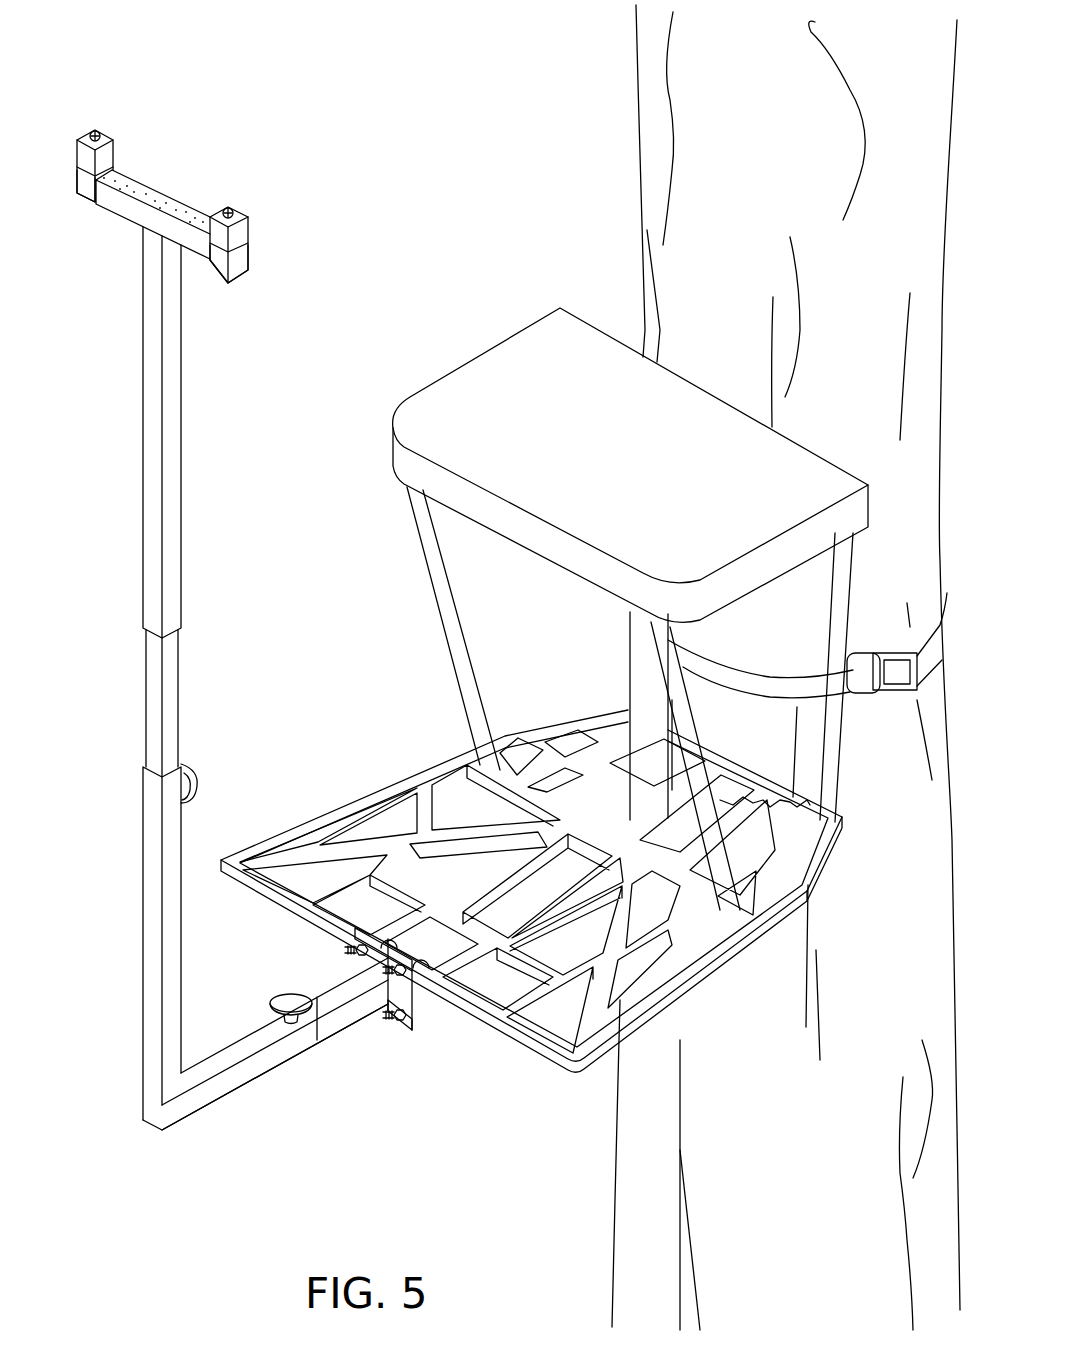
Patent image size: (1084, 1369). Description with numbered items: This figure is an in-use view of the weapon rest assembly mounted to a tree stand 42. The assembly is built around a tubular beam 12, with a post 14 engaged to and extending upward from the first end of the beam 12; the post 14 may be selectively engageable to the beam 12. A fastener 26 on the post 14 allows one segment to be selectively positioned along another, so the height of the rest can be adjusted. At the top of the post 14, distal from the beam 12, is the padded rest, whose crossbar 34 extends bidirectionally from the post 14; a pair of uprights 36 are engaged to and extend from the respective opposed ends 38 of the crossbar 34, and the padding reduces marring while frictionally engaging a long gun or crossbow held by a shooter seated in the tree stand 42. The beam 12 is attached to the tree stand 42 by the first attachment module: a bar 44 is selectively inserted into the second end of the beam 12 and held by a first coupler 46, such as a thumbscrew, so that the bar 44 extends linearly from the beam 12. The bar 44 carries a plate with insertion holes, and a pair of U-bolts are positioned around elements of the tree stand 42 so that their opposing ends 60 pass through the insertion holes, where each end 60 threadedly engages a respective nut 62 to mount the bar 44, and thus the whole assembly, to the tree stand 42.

The beam 12 is at (232, 1090).
The post 14 is at (148, 793).
The fastener 26 is at (197, 777).
The crossbar 34 is at (150, 203).
The uprights 36 is at (107, 140).
The opposed ends 38 is at (85, 190).
The tree stand 42 is at (402, 783).
The bar 44 is at (335, 1017).
The first coupler 46 is at (295, 1000).
The opposing ends of the U-bolt 60 is at (390, 1017).
The nut 62 is at (410, 1028).